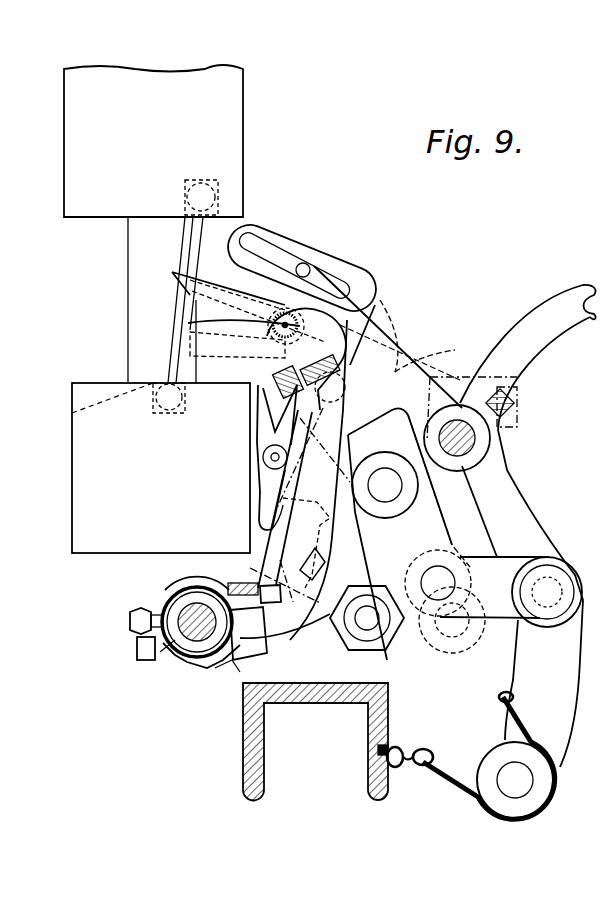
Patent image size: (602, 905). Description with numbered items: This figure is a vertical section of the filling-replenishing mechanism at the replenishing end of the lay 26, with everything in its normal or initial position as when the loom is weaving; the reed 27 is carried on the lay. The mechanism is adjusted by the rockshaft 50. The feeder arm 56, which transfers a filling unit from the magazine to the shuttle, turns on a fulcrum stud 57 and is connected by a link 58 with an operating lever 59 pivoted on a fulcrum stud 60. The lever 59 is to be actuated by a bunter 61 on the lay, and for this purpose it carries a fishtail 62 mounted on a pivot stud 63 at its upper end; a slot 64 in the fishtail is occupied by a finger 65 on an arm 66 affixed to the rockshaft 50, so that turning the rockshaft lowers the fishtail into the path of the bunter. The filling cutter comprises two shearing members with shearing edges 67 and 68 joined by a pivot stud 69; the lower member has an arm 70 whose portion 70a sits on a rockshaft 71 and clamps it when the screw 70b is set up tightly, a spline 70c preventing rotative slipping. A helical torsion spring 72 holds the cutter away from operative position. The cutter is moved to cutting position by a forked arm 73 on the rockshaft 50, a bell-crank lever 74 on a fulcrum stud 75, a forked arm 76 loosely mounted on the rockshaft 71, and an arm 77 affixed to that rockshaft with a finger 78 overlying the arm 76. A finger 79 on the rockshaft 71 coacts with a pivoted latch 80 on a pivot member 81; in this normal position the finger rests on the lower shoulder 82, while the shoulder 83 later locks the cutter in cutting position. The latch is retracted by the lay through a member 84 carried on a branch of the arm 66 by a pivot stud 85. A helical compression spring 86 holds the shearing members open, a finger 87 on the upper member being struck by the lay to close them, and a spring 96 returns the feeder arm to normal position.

The lay 26 is at (83, 463).
The reed 27 is at (177, 355).
The rockshaft 50 is at (475, 443).
The feeder arm 56 is at (521, 688).
The fulcrum stud 57 is at (512, 779).
The link 58 is at (511, 579).
The operating lever 59 is at (398, 531).
The fulcrum stud 60 is at (385, 485).
The bunter 61 is at (262, 390).
The fishtail 62 is at (182, 313).
The pivot stud 63 is at (348, 440).
The slot 64 is at (275, 256).
The finger 65 is at (308, 265).
The arm 66 is at (395, 374).
The shearing edge 67 is at (213, 312).
The shearing edge 68 is at (228, 355).
The pivot stud 69 is at (375, 318).
The arm 70 is at (303, 485).
The portion of arm 70a is at (176, 656).
The screw 70b is at (143, 638).
The spline 70c is at (185, 596).
The rockshaft 71 is at (182, 652).
The helical torsion spring 72 is at (135, 657).
The forked arm 73 is at (440, 497).
The bell-crank lever 74 is at (440, 557).
The fulcrum stud 75 is at (468, 632).
The forked arm 76 is at (303, 652).
The arm 77 is at (226, 662).
The finger 78 is at (266, 612).
The finger 79 is at (270, 571).
The pivoted latch 80 is at (362, 566).
The pivot member 81 is at (393, 660).
The lower shoulder 82 is at (302, 560).
The shoulder 83 is at (305, 543).
The member 84 is at (258, 525).
The pivot stud 85 is at (266, 456).
The helical compression spring 86 is at (370, 333).
The finger 87 is at (258, 415).
The spring 96 is at (507, 727).